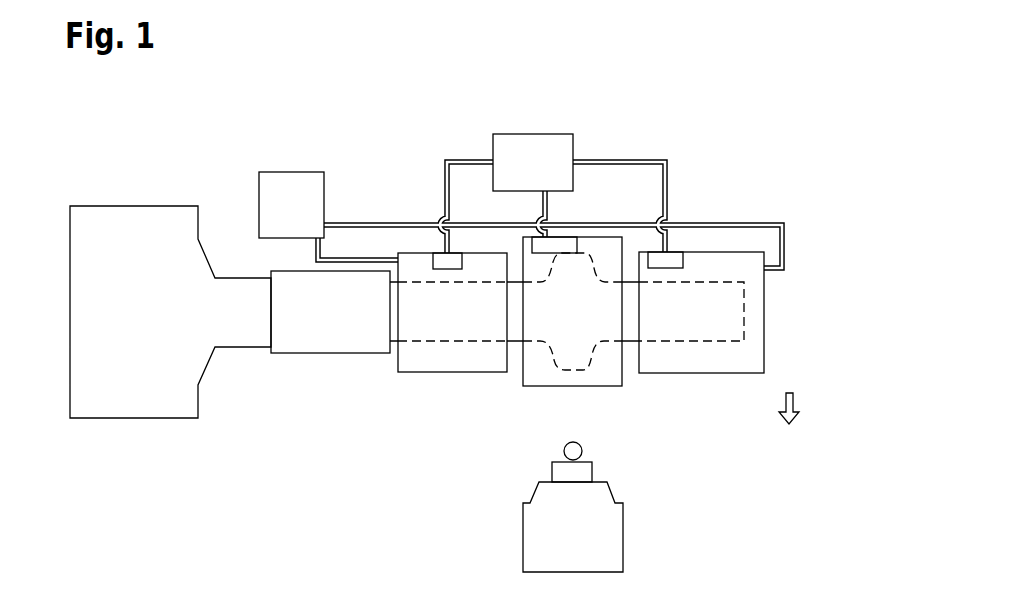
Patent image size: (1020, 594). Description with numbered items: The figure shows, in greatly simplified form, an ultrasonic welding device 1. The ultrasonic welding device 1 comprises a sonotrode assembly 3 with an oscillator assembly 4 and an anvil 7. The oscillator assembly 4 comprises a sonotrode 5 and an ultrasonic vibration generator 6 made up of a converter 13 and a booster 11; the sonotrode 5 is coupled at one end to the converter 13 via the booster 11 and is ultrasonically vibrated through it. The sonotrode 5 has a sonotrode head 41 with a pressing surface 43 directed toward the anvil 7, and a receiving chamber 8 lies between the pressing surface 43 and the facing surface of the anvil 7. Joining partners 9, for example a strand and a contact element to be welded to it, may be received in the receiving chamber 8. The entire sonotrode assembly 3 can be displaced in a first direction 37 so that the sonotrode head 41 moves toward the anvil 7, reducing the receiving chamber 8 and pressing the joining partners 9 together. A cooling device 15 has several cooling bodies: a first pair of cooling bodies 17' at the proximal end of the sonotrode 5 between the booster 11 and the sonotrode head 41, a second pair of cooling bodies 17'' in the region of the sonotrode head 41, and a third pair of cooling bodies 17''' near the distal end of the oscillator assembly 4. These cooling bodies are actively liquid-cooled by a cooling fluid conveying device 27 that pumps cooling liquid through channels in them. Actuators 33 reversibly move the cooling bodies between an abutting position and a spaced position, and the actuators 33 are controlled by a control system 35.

The ultrasonic welding device 1 is at (837, 347).
The sonotrode assembly 3 is at (135, 124).
The oscillator assembly 4 is at (296, 360).
The sonotrode 5 is at (735, 318).
The ultrasonic vibration generator 6 is at (262, 265).
The anvil 7 is at (610, 543).
The receiving chamber 8 is at (545, 468).
The joining partners 9 is at (582, 449).
The booster 11 is at (345, 340).
The converter 13 is at (157, 405).
The cooling device 15 is at (372, 250).
The first pair of cooling bodies 17' is at (452, 350).
The second pair of cooling bodies 17'' is at (566, 342).
The third pair of cooling bodies 17''' is at (701, 350).
The cooling fluid conveying device 27 is at (298, 187).
The actuators 33 is at (448, 262).
The control system 35 is at (535, 149).
The first direction 37 is at (797, 403).
The sonotrode head 41 is at (573, 348).
The pressing surface 43 is at (573, 369).